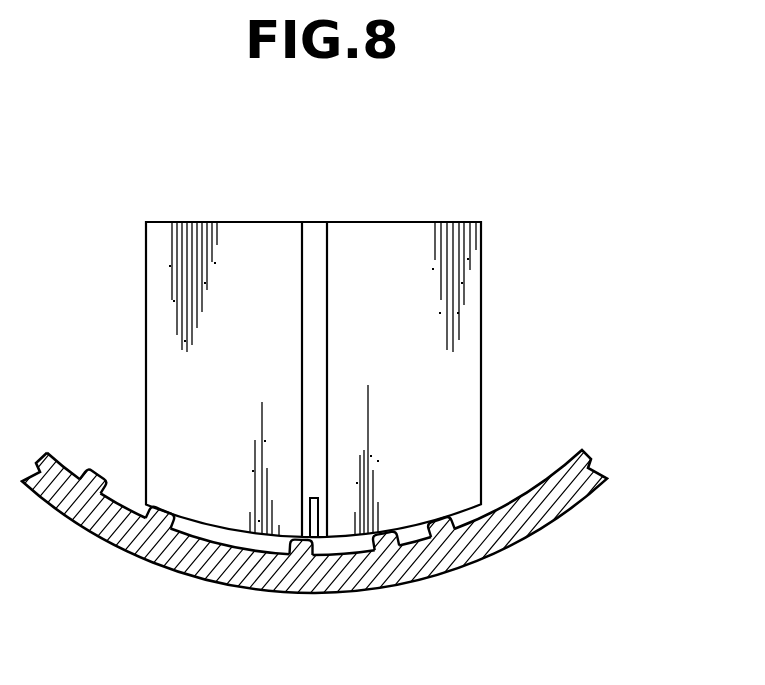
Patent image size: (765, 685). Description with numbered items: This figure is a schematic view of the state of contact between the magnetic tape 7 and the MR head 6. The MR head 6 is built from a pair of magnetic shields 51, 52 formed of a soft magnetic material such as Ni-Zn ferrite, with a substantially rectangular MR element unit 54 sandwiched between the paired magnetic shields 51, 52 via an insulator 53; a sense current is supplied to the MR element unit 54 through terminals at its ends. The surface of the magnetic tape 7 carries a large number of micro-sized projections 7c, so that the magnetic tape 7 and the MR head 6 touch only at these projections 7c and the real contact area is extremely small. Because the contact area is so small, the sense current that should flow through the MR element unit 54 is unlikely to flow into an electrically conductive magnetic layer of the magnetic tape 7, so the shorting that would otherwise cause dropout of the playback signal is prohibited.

The MR head 6 is at (376, 407).
The magnetic tape 7 is at (375, 541).
The micro-sized projections 7c is at (438, 517).
The magnetic shield 51 is at (420, 233).
The magnetic shield 52 is at (233, 237).
The insulator 53 is at (316, 233).
The MR element unit 54 is at (322, 533).